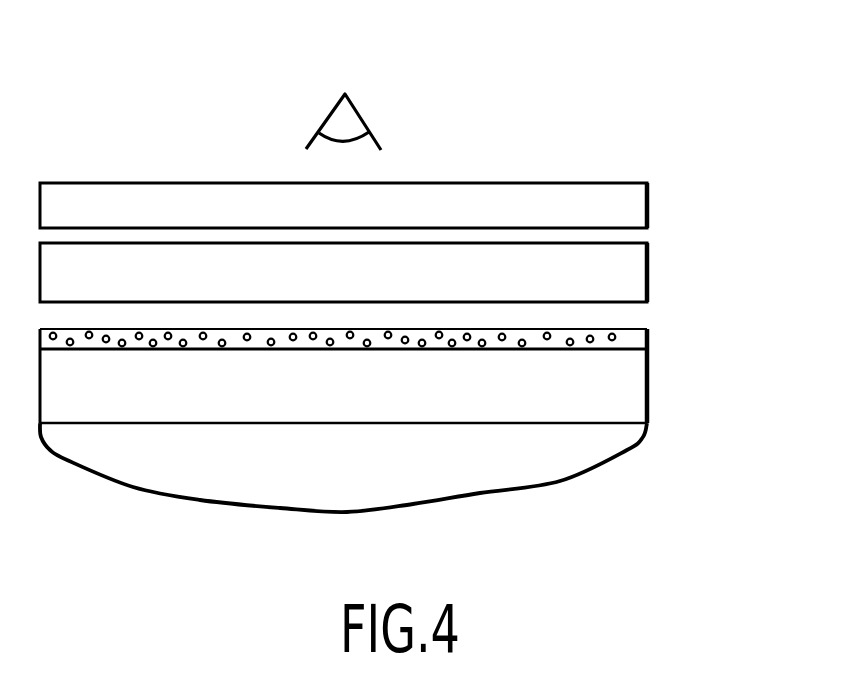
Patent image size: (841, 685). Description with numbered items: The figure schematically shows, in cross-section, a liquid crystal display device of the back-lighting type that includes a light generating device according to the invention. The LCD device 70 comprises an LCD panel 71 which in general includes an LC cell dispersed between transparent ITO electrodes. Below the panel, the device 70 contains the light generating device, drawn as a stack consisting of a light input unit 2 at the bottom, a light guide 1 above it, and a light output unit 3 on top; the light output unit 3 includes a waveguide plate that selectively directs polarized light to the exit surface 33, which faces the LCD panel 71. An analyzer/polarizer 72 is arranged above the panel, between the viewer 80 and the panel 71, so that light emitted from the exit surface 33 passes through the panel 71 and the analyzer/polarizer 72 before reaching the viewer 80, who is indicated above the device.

The LCD device 70 is at (656, 122).
The viewer 80 is at (365, 122).
The analyzer/polarizer 72 is at (625, 208).
The LCD panel 71 is at (625, 275).
The exit surface 33 is at (533, 326).
The light output unit 3 is at (633, 339).
The light guide 1 is at (623, 384).
The light input unit 2 is at (623, 444).